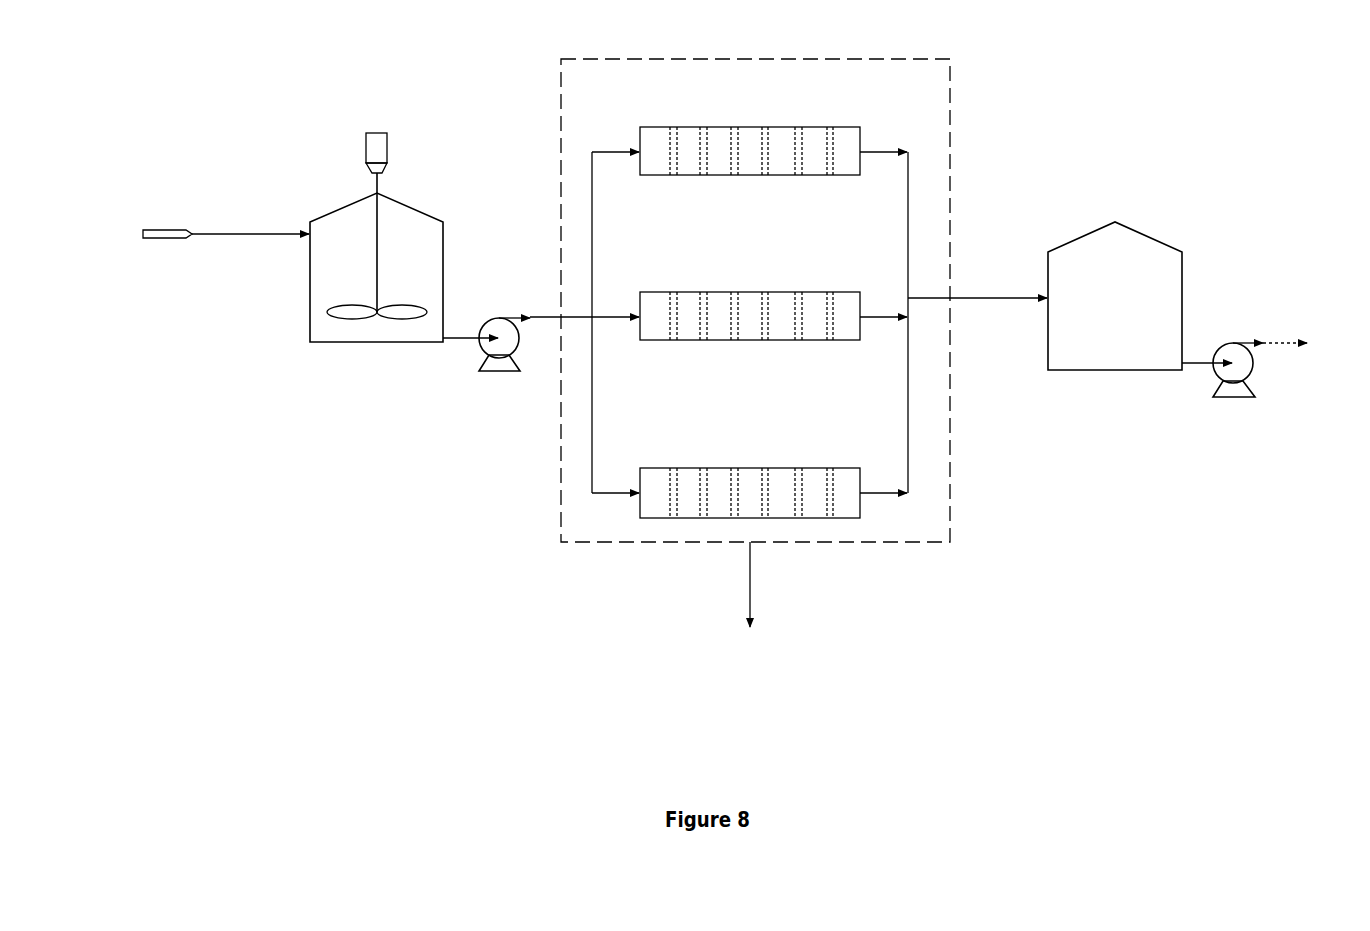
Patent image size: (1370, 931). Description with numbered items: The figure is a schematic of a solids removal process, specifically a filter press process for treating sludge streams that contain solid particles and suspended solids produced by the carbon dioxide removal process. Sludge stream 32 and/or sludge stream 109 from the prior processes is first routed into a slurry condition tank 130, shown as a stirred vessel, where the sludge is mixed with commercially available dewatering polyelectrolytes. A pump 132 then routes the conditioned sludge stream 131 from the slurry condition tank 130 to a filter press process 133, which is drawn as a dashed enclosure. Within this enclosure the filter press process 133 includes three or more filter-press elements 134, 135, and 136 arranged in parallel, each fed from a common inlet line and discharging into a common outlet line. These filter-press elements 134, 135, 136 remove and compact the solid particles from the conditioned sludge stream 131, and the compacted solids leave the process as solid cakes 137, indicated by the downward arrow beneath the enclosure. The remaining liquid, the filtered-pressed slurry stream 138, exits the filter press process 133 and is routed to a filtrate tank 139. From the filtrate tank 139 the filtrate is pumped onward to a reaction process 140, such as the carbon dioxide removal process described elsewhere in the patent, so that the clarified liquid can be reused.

The sludge stream 32 is at (197, 218).
The sludge stream 109 is at (197, 218).
The slurry condition tank 130 is at (433, 262).
The conditioned sludge stream 131 is at (486, 312).
The pump 132 is at (530, 411).
The filter press process 133 is at (637, 97).
The filter-press element 134 is at (772, 121).
The filter-press element 135 is at (772, 271).
The filter-press element 136 is at (779, 452).
The solid cakes 137 is at (766, 609).
The filtered-pressed slurry stream 138 is at (977, 280).
The filtrate tank 139 is at (1144, 311).
The reaction process 140 is at (1271, 363).